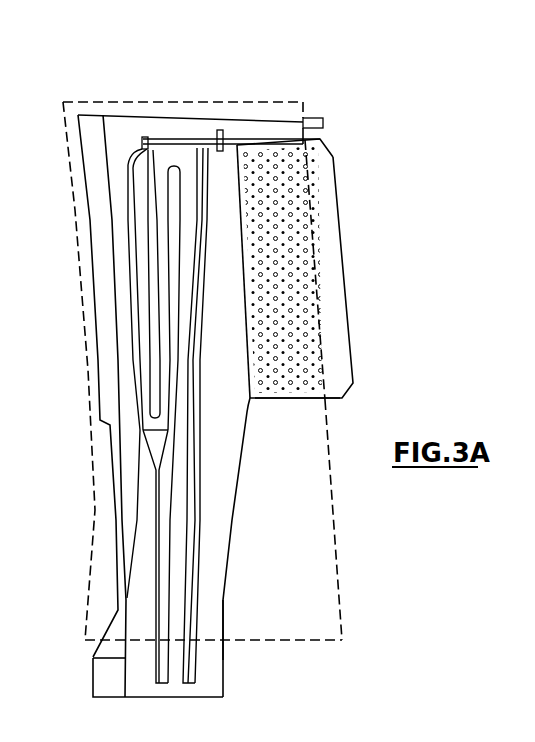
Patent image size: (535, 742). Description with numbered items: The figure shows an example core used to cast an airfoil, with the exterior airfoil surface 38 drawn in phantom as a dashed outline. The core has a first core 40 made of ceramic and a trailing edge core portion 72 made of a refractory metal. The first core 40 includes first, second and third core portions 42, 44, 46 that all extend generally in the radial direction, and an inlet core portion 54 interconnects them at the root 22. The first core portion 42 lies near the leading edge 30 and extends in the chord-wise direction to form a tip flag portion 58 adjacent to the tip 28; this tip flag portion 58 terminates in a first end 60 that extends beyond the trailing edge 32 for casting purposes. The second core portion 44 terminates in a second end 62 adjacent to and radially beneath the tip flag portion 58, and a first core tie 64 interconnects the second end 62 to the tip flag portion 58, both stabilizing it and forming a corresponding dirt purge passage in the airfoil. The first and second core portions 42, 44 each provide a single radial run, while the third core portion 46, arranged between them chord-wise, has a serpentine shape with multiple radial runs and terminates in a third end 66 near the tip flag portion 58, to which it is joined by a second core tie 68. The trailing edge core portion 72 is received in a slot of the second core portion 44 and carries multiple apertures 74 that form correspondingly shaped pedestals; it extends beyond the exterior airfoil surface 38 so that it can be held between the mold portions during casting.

The root 22 is at (256, 644).
The tip 28 is at (186, 100).
The leading edge 30 is at (80, 376).
The trailing edge 32 is at (332, 431).
The exterior airfoil surface 38 is at (343, 612).
The first core 40 is at (233, 629).
The first core portion 42 is at (120, 535).
The second core portion 44 is at (222, 487).
The third core portion 46 is at (180, 550).
The inlet core portion 54 is at (140, 690).
The tip flag portion 58 is at (187, 127).
The first end 60 is at (315, 118).
The second end 62 is at (222, 166).
The first core tie 64 is at (222, 130).
The third end 66 is at (140, 160).
The second core tie 68 is at (142, 142).
The trailing edge core portion 72 is at (291, 410).
The apertures 74 is at (266, 201).